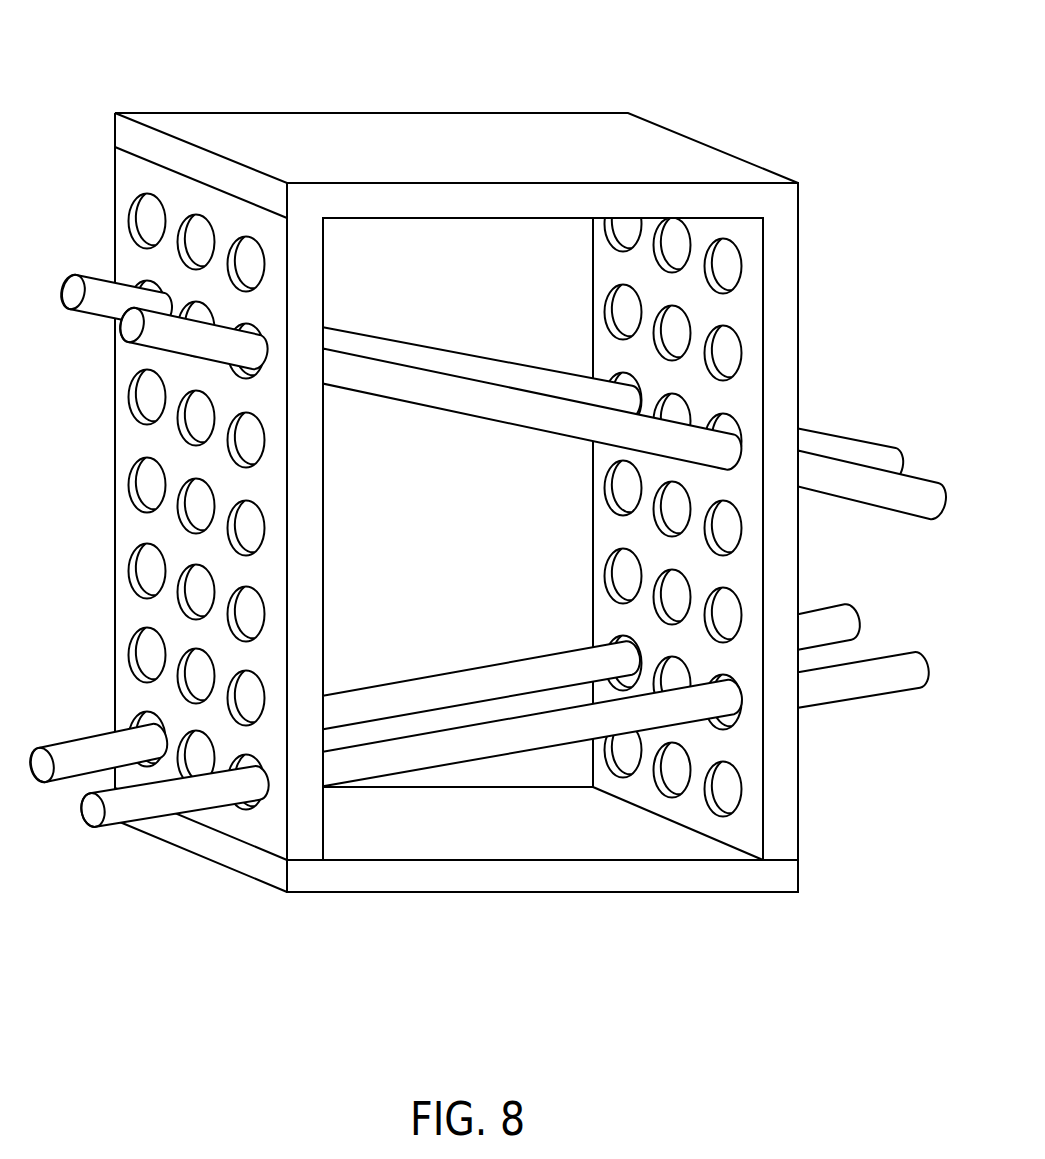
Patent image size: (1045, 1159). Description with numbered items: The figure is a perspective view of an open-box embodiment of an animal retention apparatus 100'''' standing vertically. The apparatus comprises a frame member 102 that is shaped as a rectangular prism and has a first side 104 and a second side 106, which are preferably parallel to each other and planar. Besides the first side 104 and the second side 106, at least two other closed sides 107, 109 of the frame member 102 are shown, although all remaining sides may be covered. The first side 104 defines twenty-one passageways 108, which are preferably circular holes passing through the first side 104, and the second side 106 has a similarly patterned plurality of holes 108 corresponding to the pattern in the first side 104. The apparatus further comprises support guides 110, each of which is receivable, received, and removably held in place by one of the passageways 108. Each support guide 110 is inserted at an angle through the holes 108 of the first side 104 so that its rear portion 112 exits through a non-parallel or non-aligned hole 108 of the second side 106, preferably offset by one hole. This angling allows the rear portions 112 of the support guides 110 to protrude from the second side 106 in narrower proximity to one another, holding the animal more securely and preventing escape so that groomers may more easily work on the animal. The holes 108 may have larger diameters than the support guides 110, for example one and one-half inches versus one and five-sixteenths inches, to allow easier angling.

The animal retention apparatus 100'''' is at (487, 513).
The frame member 102 is at (338, 876).
The first side 104 is at (161, 502).
The second side 106 is at (737, 319).
The closed side 107 is at (449, 150).
The passageways 108 is at (203, 510).
The closed side 109 is at (487, 878).
The support guides 110 is at (131, 750).
The rear portions 112 is at (842, 477).